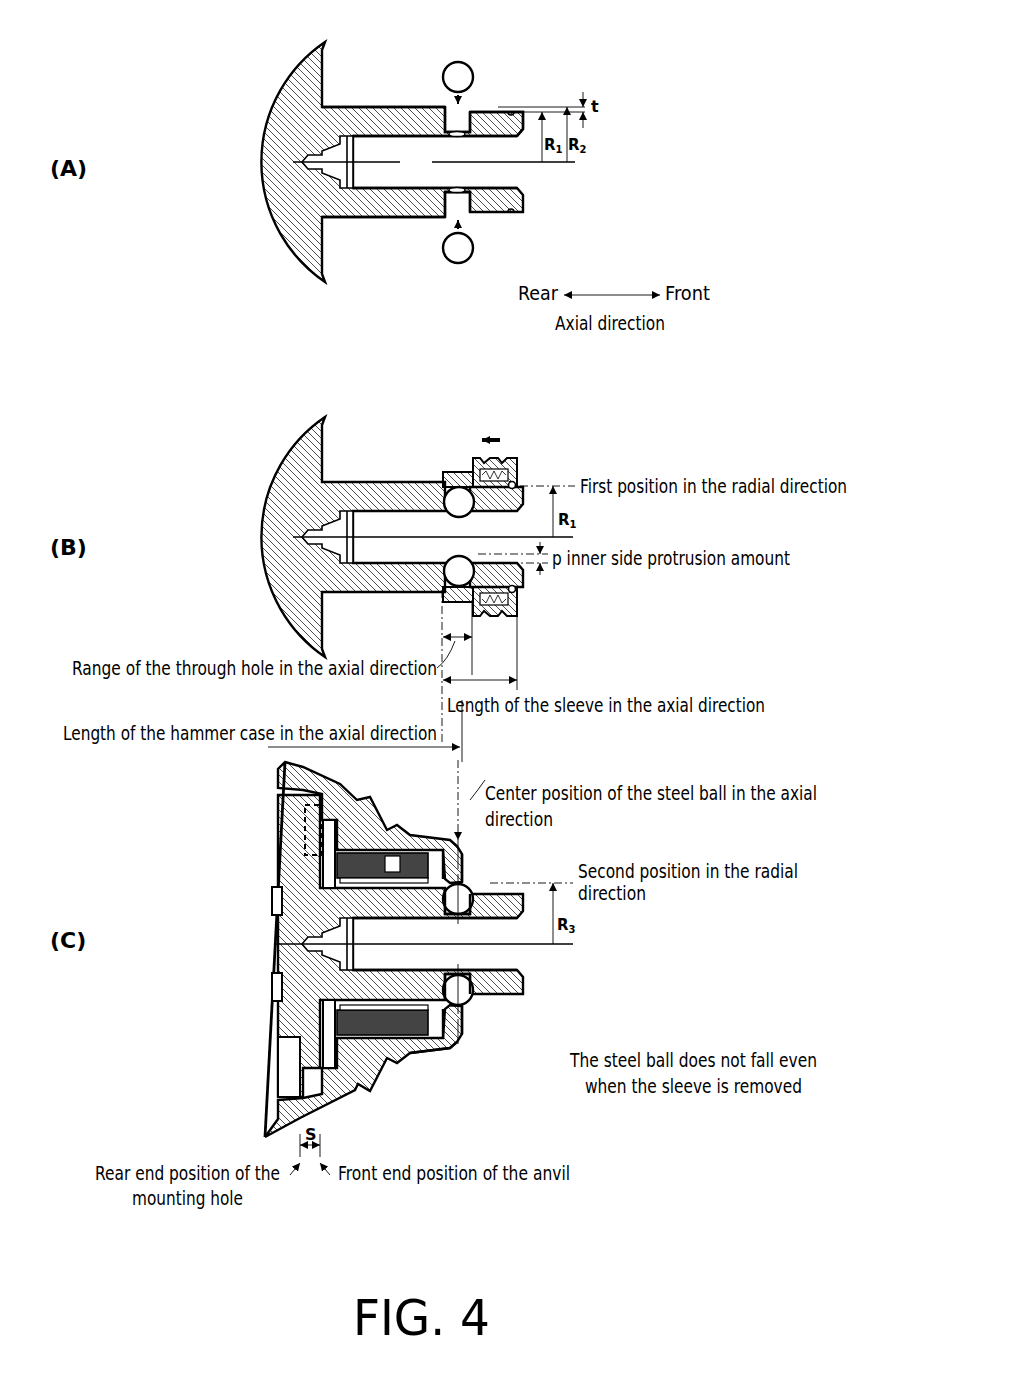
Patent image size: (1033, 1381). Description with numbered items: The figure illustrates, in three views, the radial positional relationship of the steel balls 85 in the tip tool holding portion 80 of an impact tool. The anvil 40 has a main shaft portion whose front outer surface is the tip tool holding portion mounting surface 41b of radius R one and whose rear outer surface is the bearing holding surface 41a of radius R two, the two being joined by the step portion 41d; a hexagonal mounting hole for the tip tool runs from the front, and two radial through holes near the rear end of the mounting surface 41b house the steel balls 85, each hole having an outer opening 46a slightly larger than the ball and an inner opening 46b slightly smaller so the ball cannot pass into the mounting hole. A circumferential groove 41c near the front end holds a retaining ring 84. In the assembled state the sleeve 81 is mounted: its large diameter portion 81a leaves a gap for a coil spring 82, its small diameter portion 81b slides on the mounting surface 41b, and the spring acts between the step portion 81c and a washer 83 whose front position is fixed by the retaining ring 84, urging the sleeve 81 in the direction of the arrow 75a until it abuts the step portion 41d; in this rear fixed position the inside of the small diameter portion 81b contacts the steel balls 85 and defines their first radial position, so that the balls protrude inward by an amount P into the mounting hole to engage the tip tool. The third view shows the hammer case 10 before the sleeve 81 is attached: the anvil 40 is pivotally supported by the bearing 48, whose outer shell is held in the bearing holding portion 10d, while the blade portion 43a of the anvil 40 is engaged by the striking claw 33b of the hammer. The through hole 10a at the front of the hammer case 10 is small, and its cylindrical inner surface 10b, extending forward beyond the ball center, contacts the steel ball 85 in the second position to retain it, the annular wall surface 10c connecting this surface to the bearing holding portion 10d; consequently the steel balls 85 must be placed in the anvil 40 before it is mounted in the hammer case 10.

The hammer case 10 is at (411, 949).
The through hole 10a is at (503, 1018).
The cylindrical inner surface 10b is at (477, 956).
The annular wall surface 10c is at (467, 974).
The bearing holding portion 10d is at (427, 1082).
The striking claw 33b is at (242, 1067).
The anvil 40 is at (372, 43).
The bearing holding surface 41a is at (383, 56).
The tip tool holding portion mounting surface 41b is at (509, 74).
The circumferential groove 41c is at (559, 182).
The step portion 41d is at (384, 249).
The blade portion 43a is at (255, 830).
The opening 46a is at (483, 218).
The opening 46b is at (434, 162).
The bearing 48 is at (383, 932).
The arrow 75a is at (491, 429).
The tip tool holding portion 80 is at (492, 502).
The sleeve 81 is at (482, 511).
The large diameter portion 81a is at (525, 557).
The small diameter portion 81b is at (429, 444).
The step portion 81c is at (435, 613).
The coil spring 82 is at (513, 499).
The washer 83 is at (526, 503).
The retaining ring 84 is at (554, 520).
The steel ball 85 is at (474, 523).